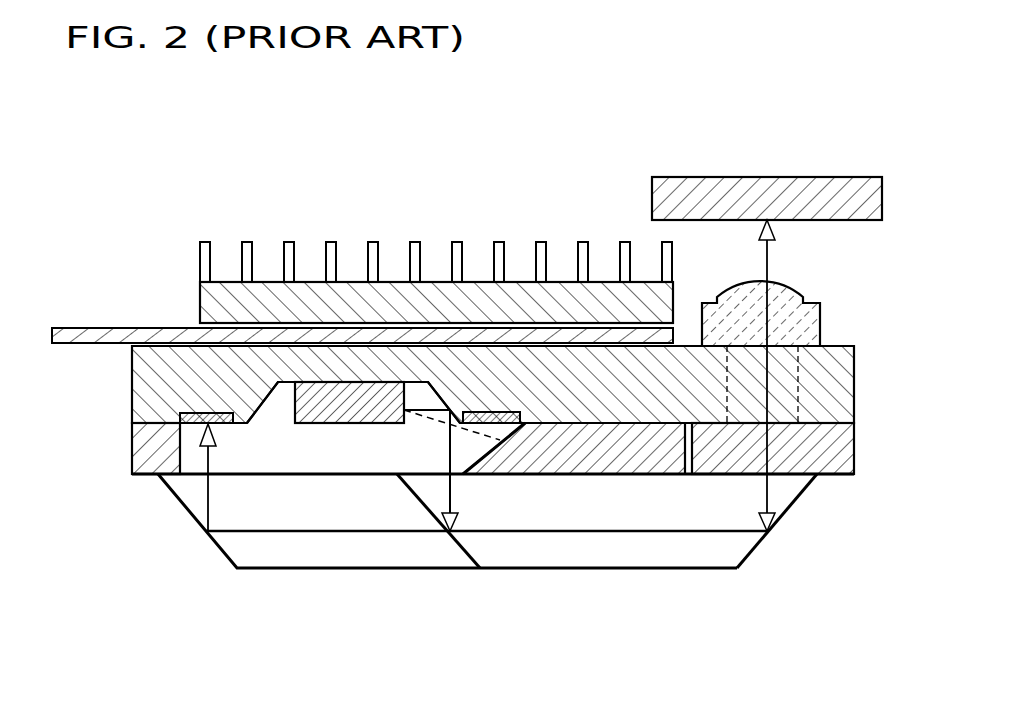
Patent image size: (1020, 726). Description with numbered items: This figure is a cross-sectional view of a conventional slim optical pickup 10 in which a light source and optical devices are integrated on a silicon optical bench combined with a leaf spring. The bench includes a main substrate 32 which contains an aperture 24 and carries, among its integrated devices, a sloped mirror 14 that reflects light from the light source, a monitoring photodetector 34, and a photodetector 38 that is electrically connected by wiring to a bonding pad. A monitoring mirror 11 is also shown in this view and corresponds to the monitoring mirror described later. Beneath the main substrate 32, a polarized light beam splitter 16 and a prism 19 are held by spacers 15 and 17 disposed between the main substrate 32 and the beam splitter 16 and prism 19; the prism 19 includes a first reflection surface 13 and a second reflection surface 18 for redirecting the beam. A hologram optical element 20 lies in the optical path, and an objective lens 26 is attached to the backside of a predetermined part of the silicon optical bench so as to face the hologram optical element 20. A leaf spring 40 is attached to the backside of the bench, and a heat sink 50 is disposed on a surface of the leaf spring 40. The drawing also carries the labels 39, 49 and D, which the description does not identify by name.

The slim optical pickup 10 is at (167, 184).
The monitoring mirror 11 is at (483, 470).
The first reflection surface 13 is at (755, 552).
The sloped mirror 14 is at (447, 400).
The spacer 15 is at (152, 472).
The polarized light beam splitter 16 is at (455, 540).
The spacer 17 is at (575, 458).
The second reflection surface 18 is at (218, 548).
The prism 19 is at (663, 545).
The hologram optical element 20 is at (843, 448).
The aperture 24 is at (797, 365).
The objective lens 26 is at (822, 303).
The main substrate 32 is at (150, 378).
The monitoring photodetector 34 is at (500, 412).
The photodetector 38 is at (167, 413).
The adhesive layer 39 is at (138, 332).
The leaf spring 40 is at (68, 330).
The heat sink fins 49 is at (266, 323).
The heat sink 50 is at (232, 303).
The detector D is at (655, 198).